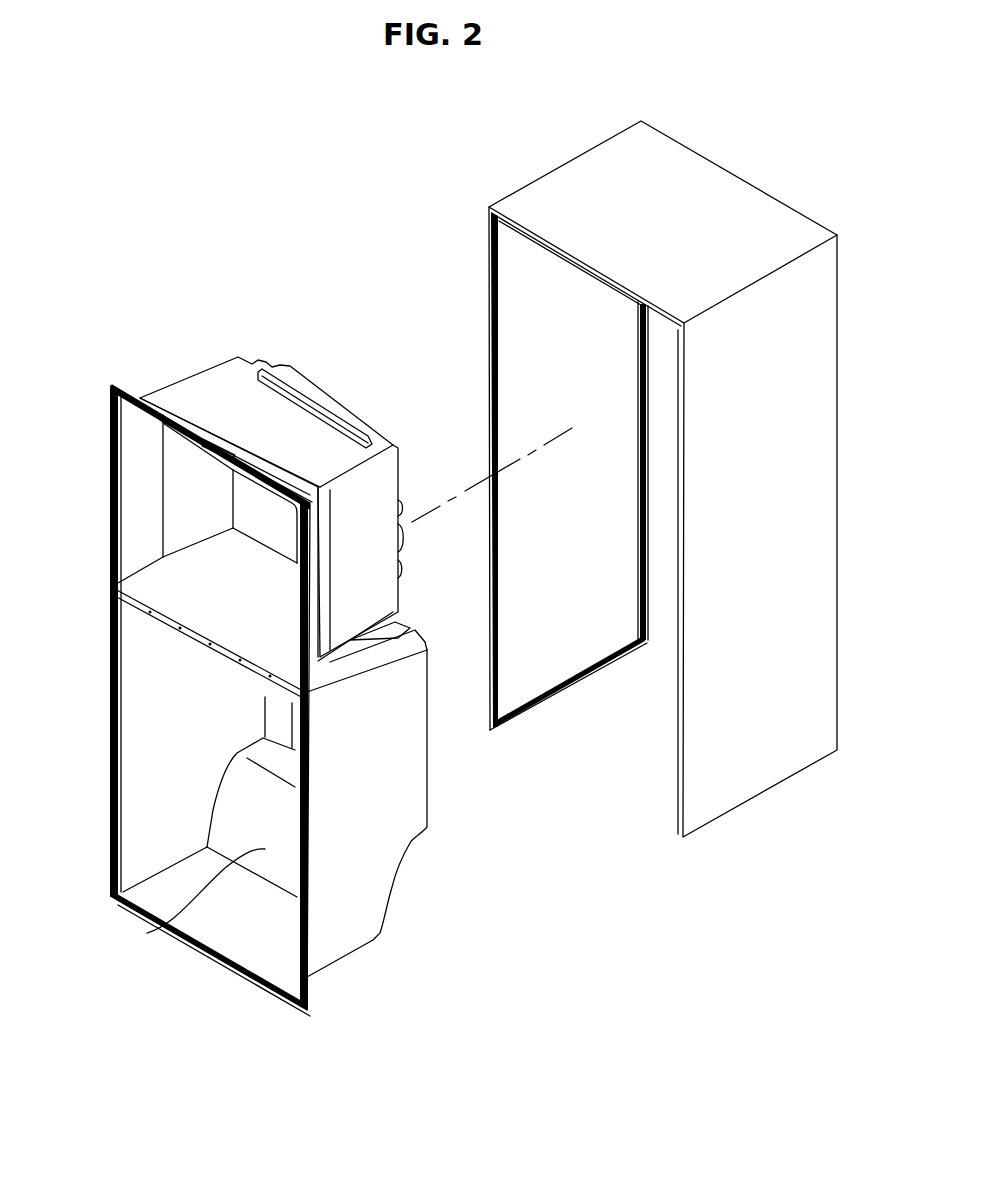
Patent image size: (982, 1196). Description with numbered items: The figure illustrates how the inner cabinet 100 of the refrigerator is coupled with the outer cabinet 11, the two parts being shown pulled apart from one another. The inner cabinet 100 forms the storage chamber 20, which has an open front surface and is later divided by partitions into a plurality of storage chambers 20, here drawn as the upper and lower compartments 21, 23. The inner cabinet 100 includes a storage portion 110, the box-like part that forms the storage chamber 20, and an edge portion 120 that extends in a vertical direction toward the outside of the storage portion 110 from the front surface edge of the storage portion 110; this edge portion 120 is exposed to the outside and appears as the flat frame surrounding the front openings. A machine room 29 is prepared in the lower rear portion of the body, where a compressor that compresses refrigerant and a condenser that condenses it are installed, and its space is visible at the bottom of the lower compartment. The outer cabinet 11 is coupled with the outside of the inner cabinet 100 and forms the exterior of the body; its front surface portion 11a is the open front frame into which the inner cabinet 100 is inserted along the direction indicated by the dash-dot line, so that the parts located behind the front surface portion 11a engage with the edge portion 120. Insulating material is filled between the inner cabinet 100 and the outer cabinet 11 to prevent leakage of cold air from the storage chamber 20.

The outer cabinet 11 is at (571, 180).
The front surface portion 11a is at (490, 273).
The inner cabinet 100 is at (284, 350).
The storage portion 110 is at (225, 380).
The edge portion 120 is at (117, 486).
The storage chamber 20 is at (155, 656).
The first storage compartment 21 is at (208, 518).
The second storage compartment 23 is at (192, 762).
The machine room 29 is at (147, 933).